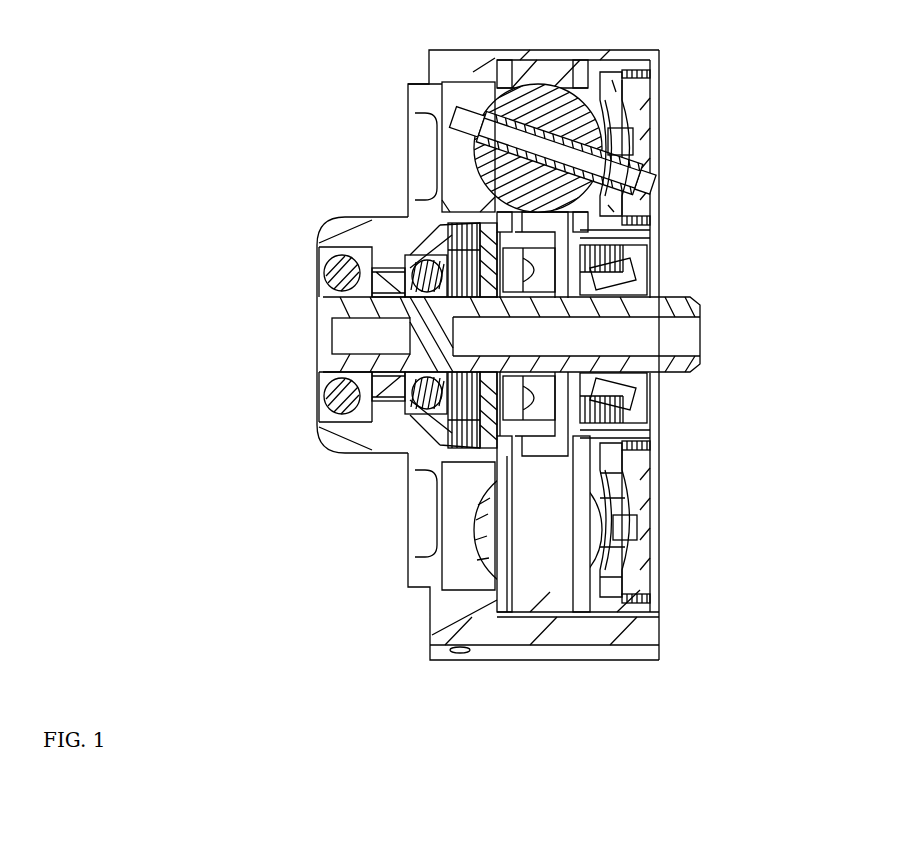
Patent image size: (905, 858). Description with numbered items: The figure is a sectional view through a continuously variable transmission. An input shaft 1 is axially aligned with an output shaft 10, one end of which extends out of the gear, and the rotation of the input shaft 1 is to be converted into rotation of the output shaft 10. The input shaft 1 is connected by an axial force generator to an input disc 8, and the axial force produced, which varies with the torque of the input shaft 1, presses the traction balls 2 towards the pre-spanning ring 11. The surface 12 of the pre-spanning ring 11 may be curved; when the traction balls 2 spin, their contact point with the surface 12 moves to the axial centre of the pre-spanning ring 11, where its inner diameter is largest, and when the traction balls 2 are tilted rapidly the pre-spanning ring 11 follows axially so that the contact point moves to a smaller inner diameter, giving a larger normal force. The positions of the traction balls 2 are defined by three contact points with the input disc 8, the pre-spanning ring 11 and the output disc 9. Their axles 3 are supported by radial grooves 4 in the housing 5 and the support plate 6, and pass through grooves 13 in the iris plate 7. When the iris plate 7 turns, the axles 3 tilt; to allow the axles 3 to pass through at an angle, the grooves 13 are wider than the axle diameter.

The input shaft 1 is at (400, 262).
The traction balls 2 is at (513, 182).
The traction ball axles 3 is at (475, 119).
The radial grooves 4 is at (470, 100).
The housing 5 is at (455, 65).
The support plate 6 is at (647, 118).
The iris plate 7 is at (628, 148).
The input disc 8 is at (513, 443).
The output disc 9 is at (577, 442).
The output shaft 10 is at (680, 363).
The pre-spanning ring 11 is at (527, 70).
The surface 12 is at (572, 82).
The grooves 13 is at (452, 435).